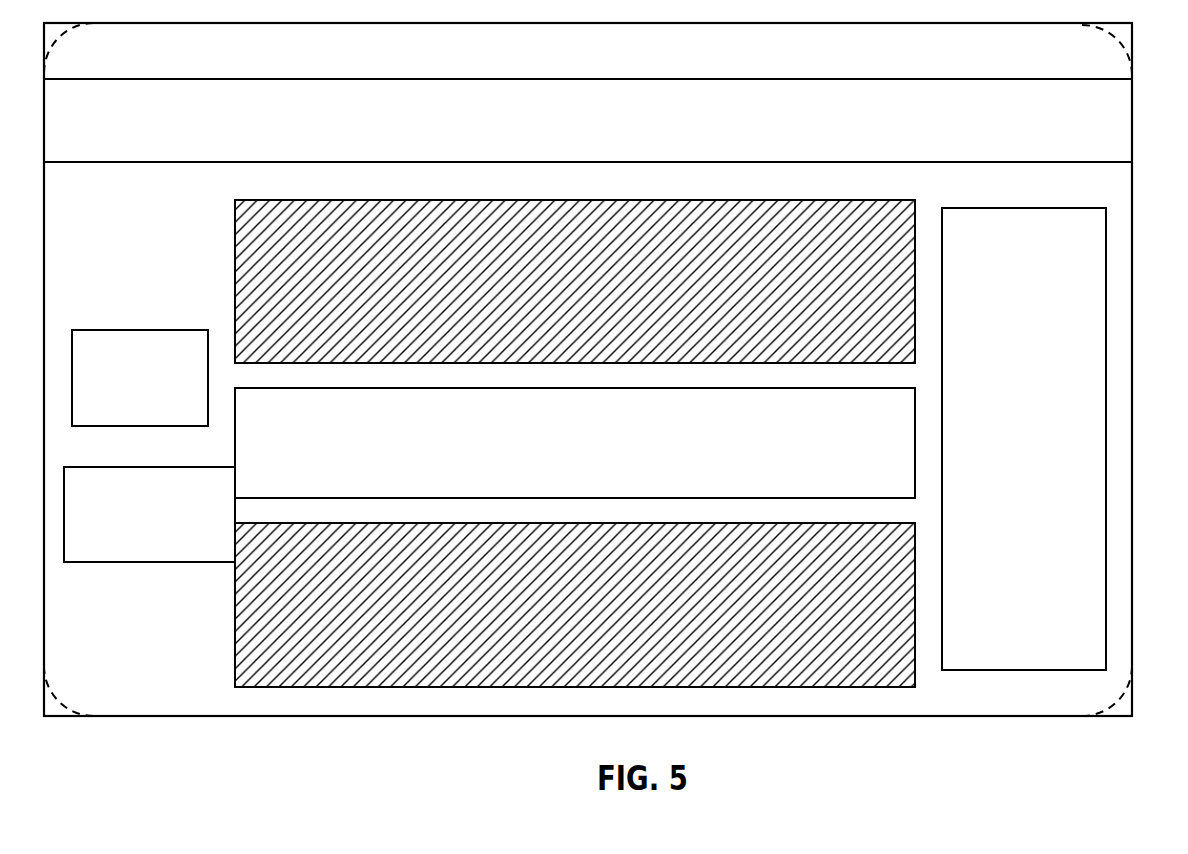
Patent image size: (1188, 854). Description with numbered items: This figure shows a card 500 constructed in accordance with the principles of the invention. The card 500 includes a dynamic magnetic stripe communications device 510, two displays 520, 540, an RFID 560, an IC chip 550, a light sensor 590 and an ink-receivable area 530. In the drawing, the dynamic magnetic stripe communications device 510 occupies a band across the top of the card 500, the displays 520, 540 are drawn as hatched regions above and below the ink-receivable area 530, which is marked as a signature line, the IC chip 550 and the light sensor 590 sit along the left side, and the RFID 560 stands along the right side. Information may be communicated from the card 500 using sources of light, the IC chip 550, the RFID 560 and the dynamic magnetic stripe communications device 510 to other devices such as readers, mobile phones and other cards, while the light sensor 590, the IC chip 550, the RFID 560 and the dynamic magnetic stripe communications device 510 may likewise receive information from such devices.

The card 500 is at (1145, 343).
The dynamic magnetic stripe communications device 510 is at (168, 82).
The display 520 is at (236, 284).
The ink-receivable area 530 is at (917, 455).
The display 540 is at (236, 590).
The IC chip 550 is at (148, 332).
The RFID 560 is at (1107, 320).
The light sensor 590 is at (142, 470).